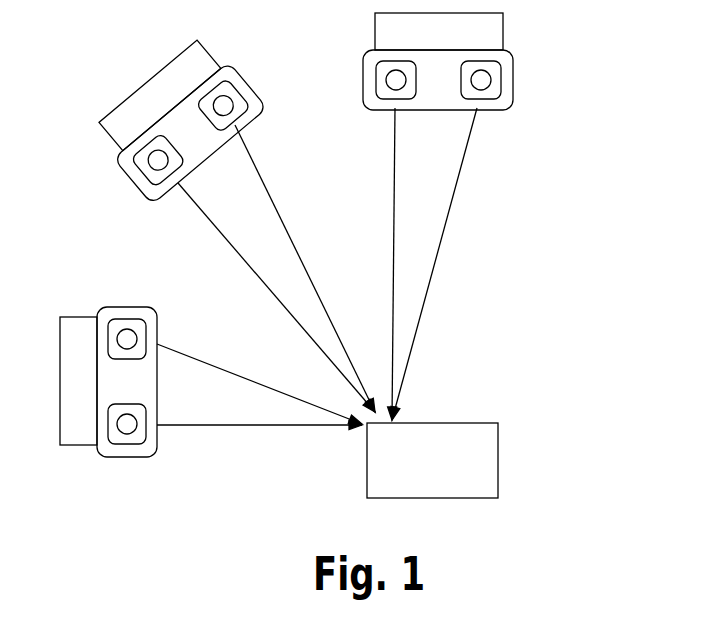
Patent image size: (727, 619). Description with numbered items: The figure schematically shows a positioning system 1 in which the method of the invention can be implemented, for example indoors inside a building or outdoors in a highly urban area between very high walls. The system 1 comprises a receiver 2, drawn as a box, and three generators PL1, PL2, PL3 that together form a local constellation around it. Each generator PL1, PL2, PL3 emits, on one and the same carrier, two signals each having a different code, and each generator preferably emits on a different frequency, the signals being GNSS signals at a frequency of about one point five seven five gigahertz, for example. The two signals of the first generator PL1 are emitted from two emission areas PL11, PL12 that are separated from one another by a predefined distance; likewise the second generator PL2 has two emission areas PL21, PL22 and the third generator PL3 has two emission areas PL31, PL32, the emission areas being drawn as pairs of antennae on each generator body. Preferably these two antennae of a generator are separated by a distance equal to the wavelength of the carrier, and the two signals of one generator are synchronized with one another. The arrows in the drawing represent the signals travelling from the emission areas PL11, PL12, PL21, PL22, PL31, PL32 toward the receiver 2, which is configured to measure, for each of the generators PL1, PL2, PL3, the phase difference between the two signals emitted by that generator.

The positioning system 1 is at (580, 121).
The receiver 2 is at (465, 458).
The generator PL1 is at (125, 307).
The emission area PL11 is at (127, 446).
The emission area PL12 is at (150, 333).
The generator PL2 is at (130, 165).
The emission area PL21 is at (150, 180).
The emission area PL22 is at (238, 80).
The generator PL3 is at (508, 80).
The emission area PL31 is at (368, 80).
The emission area PL32 is at (487, 110).